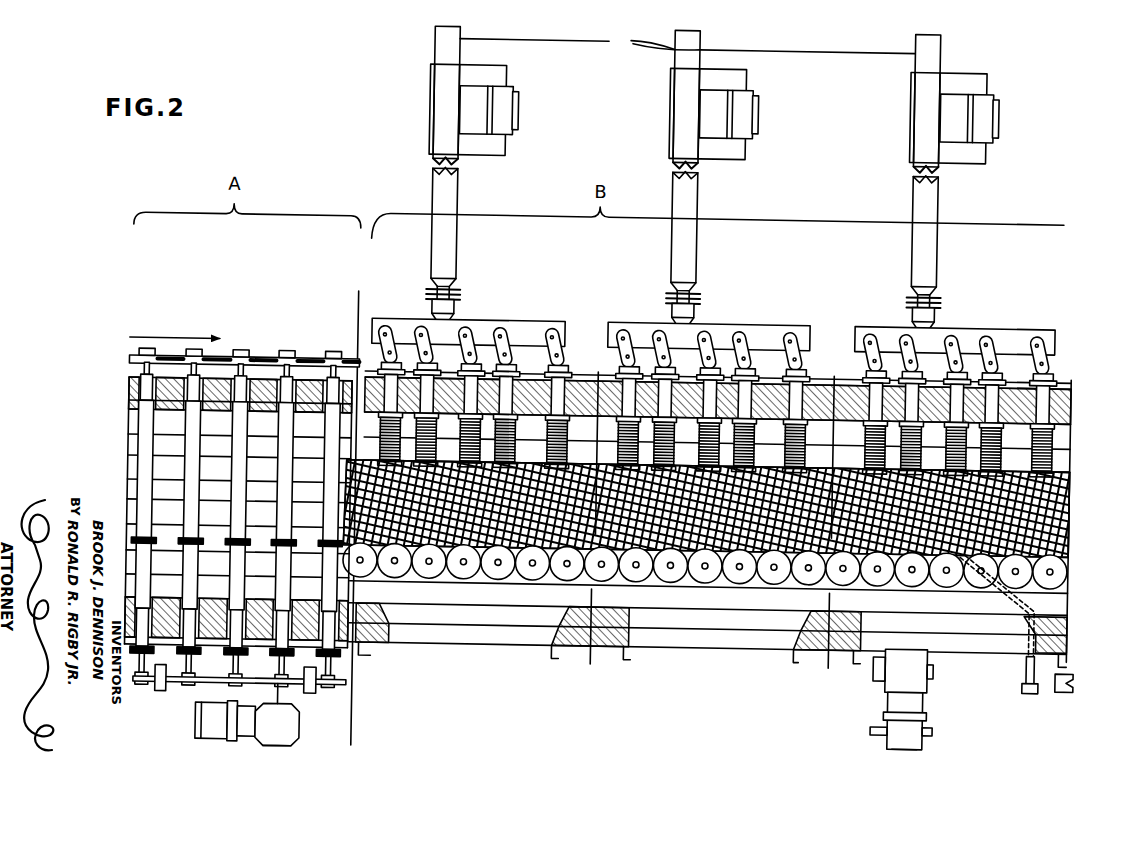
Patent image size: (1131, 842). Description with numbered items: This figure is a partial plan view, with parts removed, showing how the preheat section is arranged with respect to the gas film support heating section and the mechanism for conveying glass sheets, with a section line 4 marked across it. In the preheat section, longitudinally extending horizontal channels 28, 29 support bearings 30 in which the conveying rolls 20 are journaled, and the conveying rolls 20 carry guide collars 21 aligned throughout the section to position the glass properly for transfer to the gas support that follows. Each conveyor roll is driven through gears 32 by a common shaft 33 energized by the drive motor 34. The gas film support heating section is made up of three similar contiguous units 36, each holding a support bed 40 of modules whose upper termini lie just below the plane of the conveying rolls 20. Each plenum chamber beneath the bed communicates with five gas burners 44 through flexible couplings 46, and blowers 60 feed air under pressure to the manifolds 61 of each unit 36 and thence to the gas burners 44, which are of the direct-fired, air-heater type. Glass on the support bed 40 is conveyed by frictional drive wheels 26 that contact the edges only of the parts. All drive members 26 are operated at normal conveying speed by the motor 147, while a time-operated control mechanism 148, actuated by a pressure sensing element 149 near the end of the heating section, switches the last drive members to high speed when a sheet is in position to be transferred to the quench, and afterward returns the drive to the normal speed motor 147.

The section line 4- 4 is at (378, 291).
The conveying rolls 20 is at (247, 470).
The guide collars 21 is at (330, 541).
The drive wheels 26 is at (767, 579).
The horizontal channel 28 is at (126, 363).
The horizontal channel 29 is at (348, 676).
The bearings 30 is at (279, 353).
The gears 32 is at (286, 699).
The common shaft 33 is at (345, 698).
The drive motor 34 is at (225, 720).
The contiguous units 36 is at (561, 314).
The support bed 40 is at (566, 486).
The gas burners 44 is at (505, 376).
The flexible couplings 46 is at (513, 447).
The blowers 60 is at (687, 42).
The manifolds 61 is at (604, 330).
The motor 147 is at (927, 716).
The time-operated control mechanism 148 is at (1031, 682).
The pressure sensing element 149 is at (967, 545).